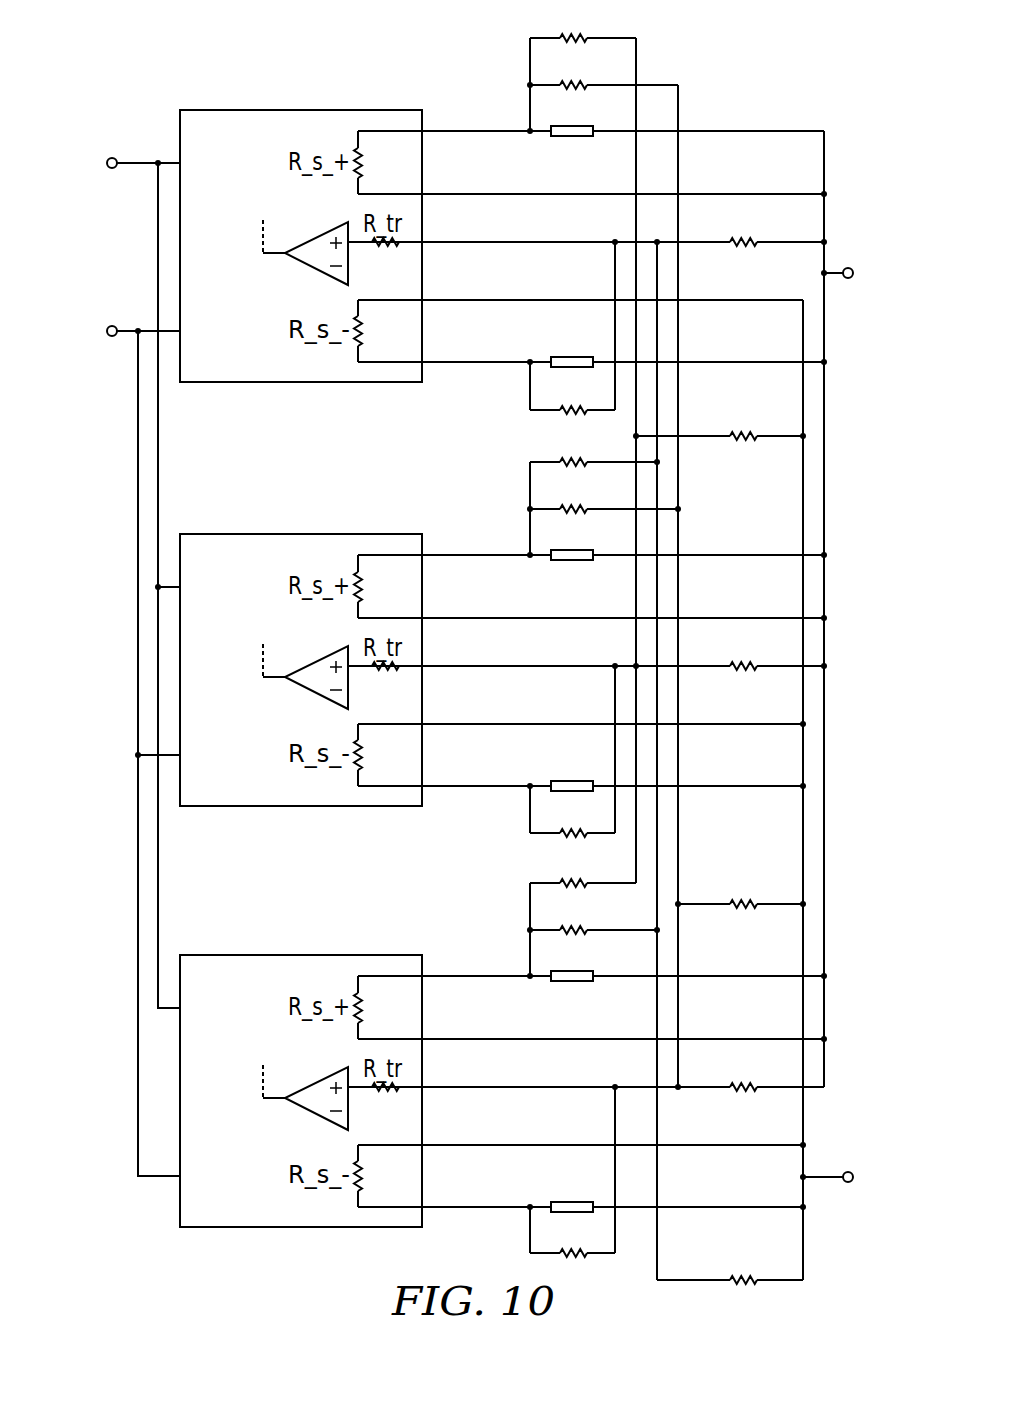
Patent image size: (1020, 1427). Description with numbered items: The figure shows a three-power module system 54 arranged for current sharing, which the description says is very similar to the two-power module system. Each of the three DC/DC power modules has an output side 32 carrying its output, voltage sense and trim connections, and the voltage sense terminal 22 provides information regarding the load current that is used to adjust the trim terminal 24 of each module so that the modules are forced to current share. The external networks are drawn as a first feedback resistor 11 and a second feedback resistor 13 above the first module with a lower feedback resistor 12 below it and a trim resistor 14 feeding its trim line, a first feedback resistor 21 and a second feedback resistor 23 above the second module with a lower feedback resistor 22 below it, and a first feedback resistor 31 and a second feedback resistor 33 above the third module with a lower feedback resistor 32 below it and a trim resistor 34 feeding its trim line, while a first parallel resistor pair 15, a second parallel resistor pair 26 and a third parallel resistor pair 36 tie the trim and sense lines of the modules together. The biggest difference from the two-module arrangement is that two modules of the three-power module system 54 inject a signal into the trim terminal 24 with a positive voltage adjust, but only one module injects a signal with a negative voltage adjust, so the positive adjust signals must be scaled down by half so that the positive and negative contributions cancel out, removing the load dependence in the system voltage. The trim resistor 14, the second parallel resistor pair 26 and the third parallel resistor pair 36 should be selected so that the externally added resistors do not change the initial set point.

The three-power module system 54 is at (157, 53).
The resistor R11 11 is at (583, 24).
The resistor R13 13 is at (602, 71).
The resistor R14 14 is at (742, 228).
The resistor R12 12 is at (572, 396).
The parallel resistors R15//R35 15 is at (719, 420).
The resistor R21 21 is at (595, 448).
The resistor R23 23 is at (604, 495).
The trim terminal 24 is at (742, 651).
The voltage sense terminal 22 is at (572, 819).
The parallel resistors R26//R16 26 is at (740, 889).
The resistor R31 31 is at (583, 869).
The resistor R33 33 is at (593, 917).
The resistor R34 34 is at (740, 1073).
The output side 32 is at (572, 1240).
The parallel resistors R36//R25 36 is at (730, 1265).